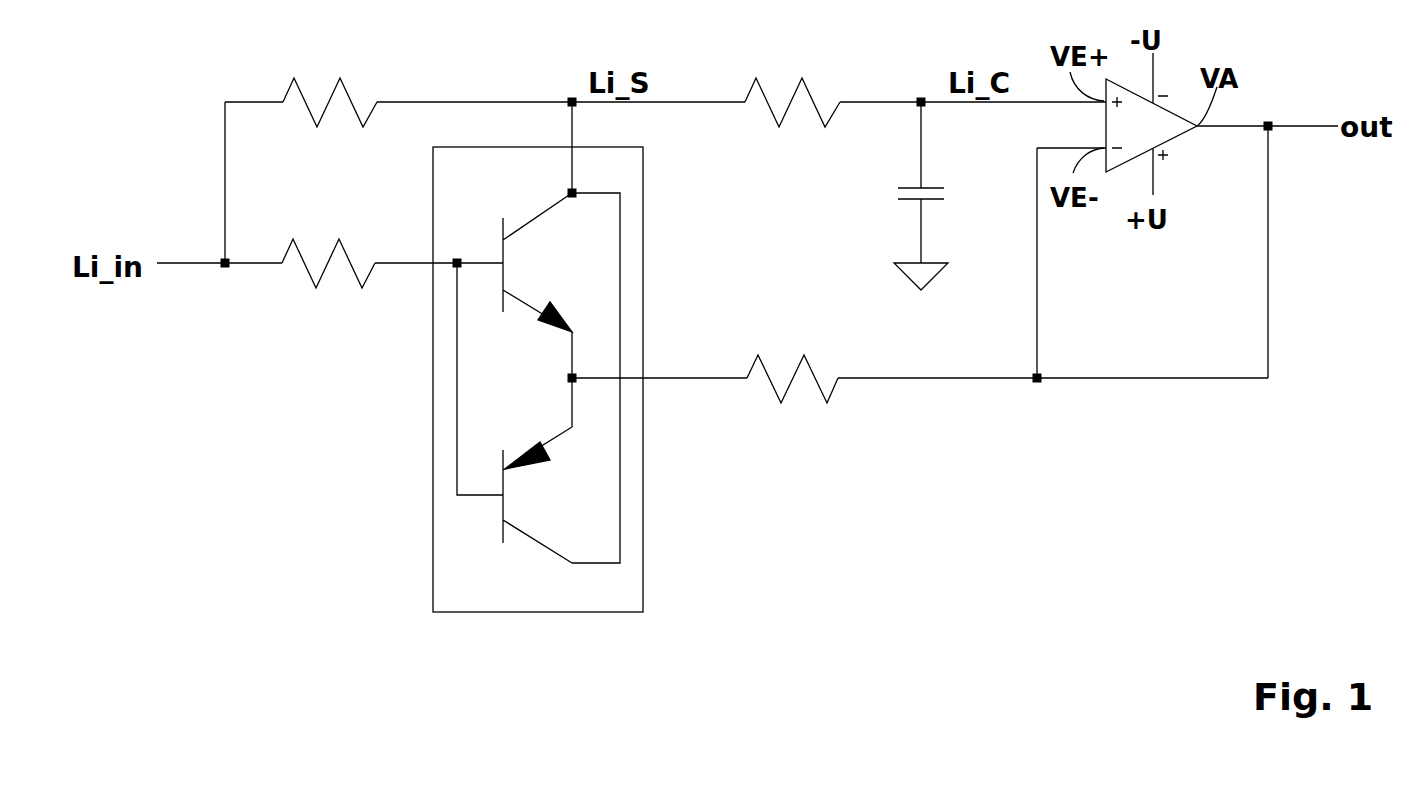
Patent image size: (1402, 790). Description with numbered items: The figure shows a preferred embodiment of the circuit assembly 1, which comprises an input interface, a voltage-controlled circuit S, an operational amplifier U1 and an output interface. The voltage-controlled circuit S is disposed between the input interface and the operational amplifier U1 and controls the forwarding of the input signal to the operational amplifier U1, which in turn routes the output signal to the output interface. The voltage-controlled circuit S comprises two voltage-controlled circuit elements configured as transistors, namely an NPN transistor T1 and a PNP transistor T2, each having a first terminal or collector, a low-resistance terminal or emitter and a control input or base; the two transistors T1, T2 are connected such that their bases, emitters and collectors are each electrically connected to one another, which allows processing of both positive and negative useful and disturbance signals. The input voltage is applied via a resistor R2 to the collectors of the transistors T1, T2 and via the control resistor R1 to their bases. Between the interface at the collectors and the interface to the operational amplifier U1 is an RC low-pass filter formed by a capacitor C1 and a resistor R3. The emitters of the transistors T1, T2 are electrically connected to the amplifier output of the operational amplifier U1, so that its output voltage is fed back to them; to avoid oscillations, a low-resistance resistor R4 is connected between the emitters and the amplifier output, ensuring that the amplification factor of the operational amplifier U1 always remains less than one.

The circuit assembly 1 is at (823, 459).
The control resistor R1 is at (328, 248).
The resistor R2 is at (330, 87).
The resistor R3 is at (792, 87).
The low-resistance resistor R4 is at (792, 362).
The capacitor C1 is at (933, 196).
The operational amplifier U1 is at (1161, 124).
The NPN transistor T1 is at (527, 277).
The PNP transistor T2 is at (528, 481).
The voltage-controlled circuit S is at (538, 379).